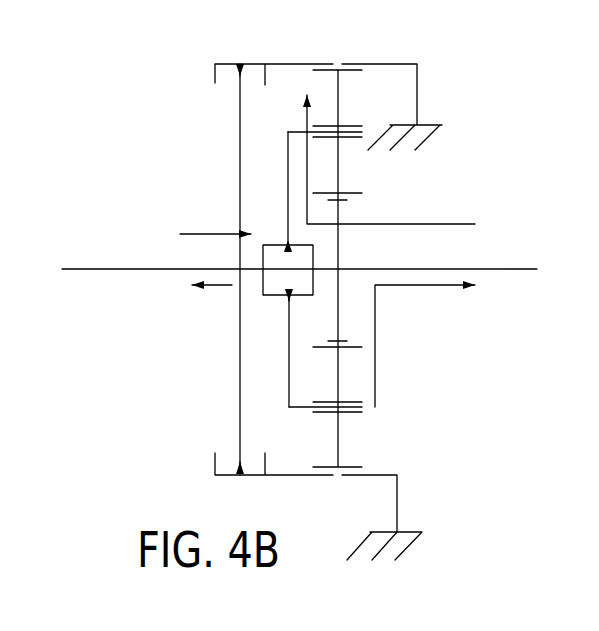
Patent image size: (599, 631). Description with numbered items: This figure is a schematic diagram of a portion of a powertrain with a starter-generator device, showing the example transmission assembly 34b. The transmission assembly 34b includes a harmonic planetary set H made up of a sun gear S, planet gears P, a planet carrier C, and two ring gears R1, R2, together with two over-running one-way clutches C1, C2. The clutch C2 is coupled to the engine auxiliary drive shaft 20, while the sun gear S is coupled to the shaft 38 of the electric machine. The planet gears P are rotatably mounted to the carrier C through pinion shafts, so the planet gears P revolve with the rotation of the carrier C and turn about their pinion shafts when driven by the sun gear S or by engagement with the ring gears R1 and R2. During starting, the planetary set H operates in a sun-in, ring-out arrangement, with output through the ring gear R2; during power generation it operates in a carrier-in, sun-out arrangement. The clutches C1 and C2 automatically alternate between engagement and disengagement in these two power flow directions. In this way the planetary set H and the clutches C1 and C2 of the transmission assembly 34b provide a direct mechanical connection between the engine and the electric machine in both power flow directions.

The transmission assembly 34b is at (172, 146).
The engine auxiliary drive shaft 20 is at (110, 270).
The shaft of the electric machine 38 is at (503, 270).
The over-running clutch C1 is at (240, 373).
The over-running clutch C2 is at (268, 296).
The sun gear S is at (335, 299).
The planet carrier C is at (288, 388).
The planet gears P is at (338, 449).
The harmonic planetary set H is at (412, 197).
The ring gear R2 is at (290, 64).
The ring gear R1 is at (398, 64).